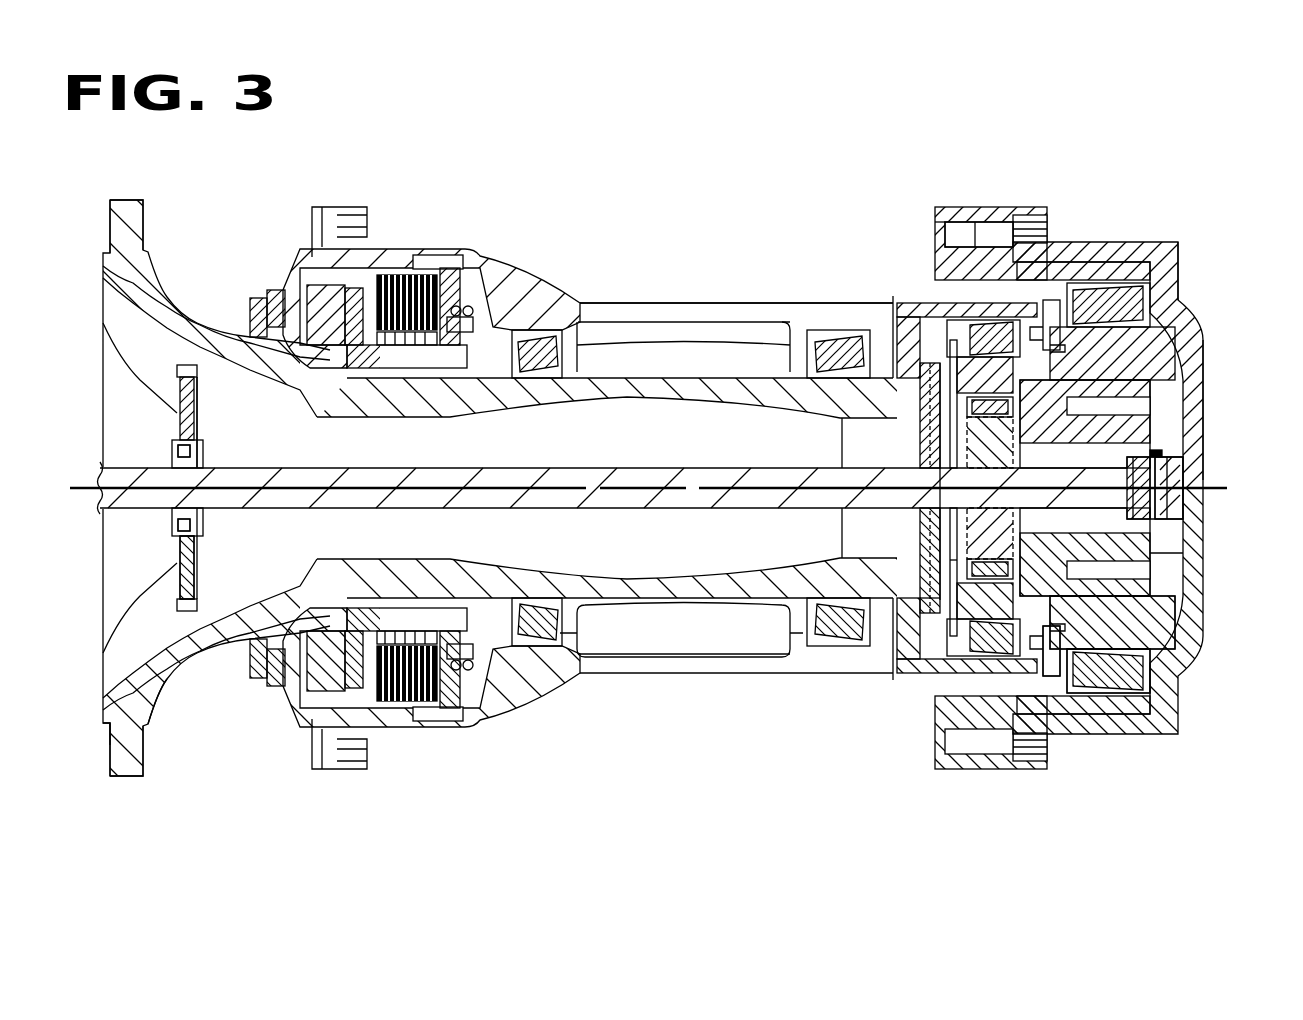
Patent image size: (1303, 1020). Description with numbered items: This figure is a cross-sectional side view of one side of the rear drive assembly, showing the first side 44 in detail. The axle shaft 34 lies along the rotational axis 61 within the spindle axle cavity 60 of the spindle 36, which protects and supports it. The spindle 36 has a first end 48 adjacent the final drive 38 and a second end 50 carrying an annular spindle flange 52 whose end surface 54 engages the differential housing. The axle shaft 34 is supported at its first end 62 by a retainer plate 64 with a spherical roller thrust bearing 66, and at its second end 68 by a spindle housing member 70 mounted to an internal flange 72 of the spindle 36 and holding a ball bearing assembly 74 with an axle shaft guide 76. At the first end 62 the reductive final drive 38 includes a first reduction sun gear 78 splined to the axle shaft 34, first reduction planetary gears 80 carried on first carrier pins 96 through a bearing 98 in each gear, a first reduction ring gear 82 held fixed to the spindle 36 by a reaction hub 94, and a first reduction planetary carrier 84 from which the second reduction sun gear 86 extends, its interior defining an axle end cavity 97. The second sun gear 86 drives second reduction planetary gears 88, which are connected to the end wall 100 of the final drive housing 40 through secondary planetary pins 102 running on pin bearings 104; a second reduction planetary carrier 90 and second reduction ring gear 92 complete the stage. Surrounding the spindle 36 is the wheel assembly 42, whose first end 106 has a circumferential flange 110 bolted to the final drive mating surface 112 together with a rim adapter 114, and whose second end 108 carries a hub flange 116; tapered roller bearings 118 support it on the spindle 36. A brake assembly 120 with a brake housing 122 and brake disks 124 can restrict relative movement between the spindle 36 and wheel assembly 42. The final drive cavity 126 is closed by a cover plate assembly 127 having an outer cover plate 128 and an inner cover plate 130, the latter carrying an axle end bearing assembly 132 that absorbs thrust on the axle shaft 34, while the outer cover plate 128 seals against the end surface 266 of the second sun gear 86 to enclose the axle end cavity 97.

The axle shaft 34 is at (270, 498).
The spindle 36 is at (430, 450).
The final drive 38 is at (1210, 298).
The final drive housing 40 is at (1123, 247).
The wheel assembly 42 is at (692, 663).
The first side 44 is at (1214, 222).
The first end 48 is at (935, 600).
The second end 50 is at (153, 700).
The spindle flange 52 is at (110, 210).
The end surface 54 is at (110, 743).
The spindle axle cavity 60 is at (250, 577).
The rotational axis 61 is at (88, 490).
The first end 62 is at (1127, 480).
The retainer plate 64 is at (860, 400).
The spherical roller thrust bearing 66 is at (913, 463).
The second end 68 is at (140, 472).
The spindle housing member 70 is at (180, 417).
The internal flange 72 is at (200, 360).
The ball bearing assembly 74 is at (180, 527).
The axle shaft guide 76 is at (173, 513).
The first reduction sun gear 78 is at (1013, 537).
The first reduction planetary gears 80 is at (1003, 320).
The first reduction ring gear 82 is at (935, 620).
The first reduction planetary carrier 84 is at (950, 355).
The second reduction sun gear 86 is at (1133, 577).
The second reduction planetary gears 88 is at (1140, 293).
The second reduction planetary carrier 90 is at (1055, 307).
The second reduction ring gear 92 is at (1053, 697).
The reaction hub 94 is at (960, 375).
The first carrier pins 96 is at (953, 337).
The axle end cavity 97 is at (1047, 464).
The bearing 98 is at (980, 640).
The end wall 100 is at (1167, 283).
The secondary planetary pins 102 is at (1160, 340).
The pin bearings 104 is at (1127, 653).
The first end 106 is at (897, 300).
The second end 108 is at (470, 243).
The circumferential flange 110 is at (965, 250).
The final drive mating surface 112 is at (977, 247).
The rim adapter 114 is at (960, 265).
The hub flange 116 is at (330, 207).
The tapered roller bearings 118 is at (530, 350).
The brake assembly 120 is at (336, 276).
The brake housing 122 is at (290, 293).
The brake disks 124 is at (407, 488).
The final drive cavity 126 is at (1088, 717).
The cover plate assembly 127 is at (1213, 354).
The outer cover plate 128 is at (1202, 347).
The inner cover plate 130 is at (1183, 500).
The axle end bearing assembly 132 is at (1160, 460).
The end surface 266 is at (1152, 552).